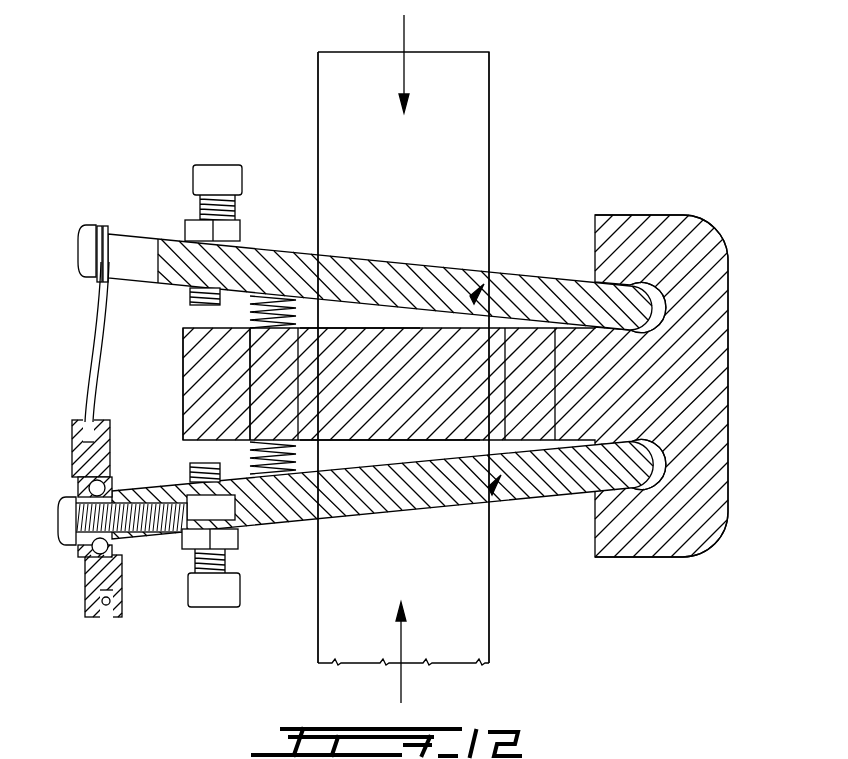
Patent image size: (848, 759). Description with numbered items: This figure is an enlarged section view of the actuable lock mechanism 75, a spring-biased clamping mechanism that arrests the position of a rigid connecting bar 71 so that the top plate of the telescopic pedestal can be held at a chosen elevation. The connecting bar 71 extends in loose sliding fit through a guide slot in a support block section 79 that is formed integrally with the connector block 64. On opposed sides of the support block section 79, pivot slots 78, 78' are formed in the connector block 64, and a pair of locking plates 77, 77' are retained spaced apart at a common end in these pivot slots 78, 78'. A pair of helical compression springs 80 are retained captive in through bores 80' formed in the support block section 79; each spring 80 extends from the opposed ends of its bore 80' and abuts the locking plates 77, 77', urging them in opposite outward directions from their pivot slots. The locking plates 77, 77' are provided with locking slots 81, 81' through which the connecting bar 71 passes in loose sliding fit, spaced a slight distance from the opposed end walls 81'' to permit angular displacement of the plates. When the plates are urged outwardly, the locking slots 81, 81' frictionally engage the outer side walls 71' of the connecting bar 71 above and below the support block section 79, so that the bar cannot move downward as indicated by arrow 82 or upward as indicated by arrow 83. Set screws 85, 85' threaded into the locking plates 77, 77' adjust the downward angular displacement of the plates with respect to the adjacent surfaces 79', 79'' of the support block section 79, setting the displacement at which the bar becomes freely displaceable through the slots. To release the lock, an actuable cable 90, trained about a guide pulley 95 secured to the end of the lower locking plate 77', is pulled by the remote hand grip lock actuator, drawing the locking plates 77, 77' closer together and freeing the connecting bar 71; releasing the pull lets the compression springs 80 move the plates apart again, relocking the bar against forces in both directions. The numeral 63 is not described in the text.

The lower contact surface 63 is at (540, 493).
The connector block 64 is at (688, 350).
The connecting bar 71 is at (442, 343).
The outer side walls 71' is at (414, 357).
The actuable lock mechanism 75 is at (94, 188).
The locking plate 77 is at (365, 240).
The locking plate 77' is at (355, 536).
The pivot slot 78 is at (705, 295).
The pivot slot 78' is at (716, 464).
The support block section 79 is at (340, 378).
The adjacent surface 79' is at (360, 257).
The adjacent surface 79'' is at (390, 509).
The helical compression spring 80 is at (273, 389).
The through bore 80' is at (465, 293).
The locking slot 81 is at (501, 255).
The locking slot 81' is at (533, 543).
The opposed end walls 81'' is at (439, 376).
The arrow 82 is at (404, 70).
The arrow 83 is at (402, 643).
The set screw 85 is at (191, 208).
The set screw 85' is at (211, 567).
The actuable cable 90 is at (105, 235).
The guide pulley 95 is at (83, 583).